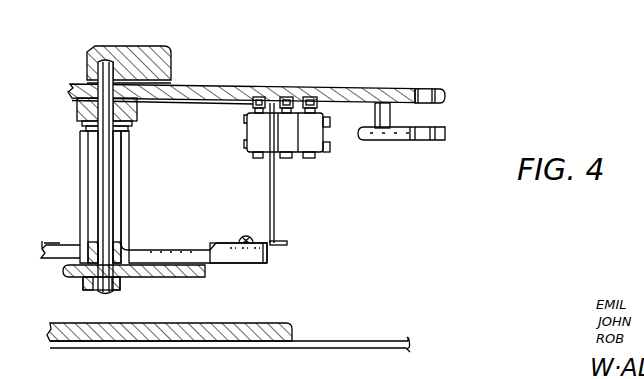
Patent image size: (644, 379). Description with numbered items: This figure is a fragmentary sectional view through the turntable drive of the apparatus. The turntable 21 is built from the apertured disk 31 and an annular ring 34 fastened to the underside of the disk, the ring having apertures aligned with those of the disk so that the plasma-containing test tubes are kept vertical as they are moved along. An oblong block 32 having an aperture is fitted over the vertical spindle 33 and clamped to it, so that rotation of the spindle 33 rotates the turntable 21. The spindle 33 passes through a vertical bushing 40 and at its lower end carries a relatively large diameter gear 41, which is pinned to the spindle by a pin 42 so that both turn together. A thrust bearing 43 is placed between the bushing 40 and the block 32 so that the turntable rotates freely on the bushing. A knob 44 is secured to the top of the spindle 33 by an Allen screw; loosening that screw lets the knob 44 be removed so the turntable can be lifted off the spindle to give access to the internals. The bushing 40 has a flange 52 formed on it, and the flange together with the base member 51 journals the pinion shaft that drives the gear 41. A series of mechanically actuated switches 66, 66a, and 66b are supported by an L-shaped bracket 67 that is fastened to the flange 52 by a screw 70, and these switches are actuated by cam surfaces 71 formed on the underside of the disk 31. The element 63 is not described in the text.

The knob 44 is at (148, 46).
The turntable 21 is at (218, 87).
The cam surfaces 71 is at (272, 90).
The apertured disk 31 is at (443, 89).
The annular ring 34 is at (447, 133).
The oblong block 32 is at (77, 103).
The thrust bearing 43 is at (130, 128).
The mechanically actuated switch 66 is at (247, 138).
The mechanically actuated switch 66a is at (290, 145).
The mechanically actuated switch 66b is at (317, 147).
The vertical bushing 40 is at (80, 182).
The vertical spindle 33 is at (107, 183).
The screw 70 is at (251, 236).
The L-shaped bracket 67 is at (287, 243).
The flange 52 is at (272, 260).
The gear 41 is at (190, 279).
The pin 42 is at (118, 284).
The base member 51 is at (275, 325).
The sheet 63 is at (270, 348).